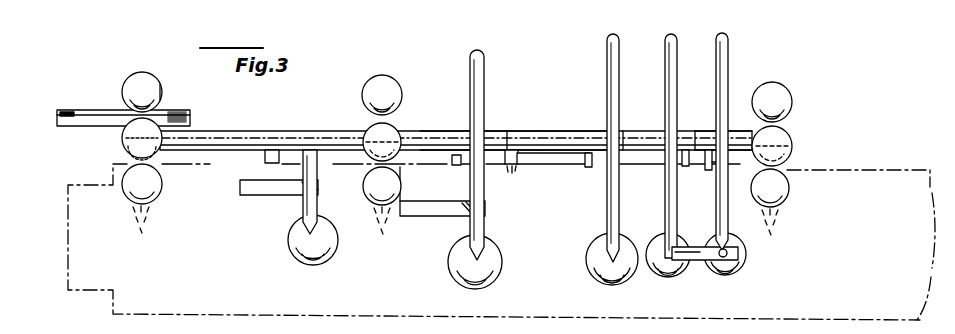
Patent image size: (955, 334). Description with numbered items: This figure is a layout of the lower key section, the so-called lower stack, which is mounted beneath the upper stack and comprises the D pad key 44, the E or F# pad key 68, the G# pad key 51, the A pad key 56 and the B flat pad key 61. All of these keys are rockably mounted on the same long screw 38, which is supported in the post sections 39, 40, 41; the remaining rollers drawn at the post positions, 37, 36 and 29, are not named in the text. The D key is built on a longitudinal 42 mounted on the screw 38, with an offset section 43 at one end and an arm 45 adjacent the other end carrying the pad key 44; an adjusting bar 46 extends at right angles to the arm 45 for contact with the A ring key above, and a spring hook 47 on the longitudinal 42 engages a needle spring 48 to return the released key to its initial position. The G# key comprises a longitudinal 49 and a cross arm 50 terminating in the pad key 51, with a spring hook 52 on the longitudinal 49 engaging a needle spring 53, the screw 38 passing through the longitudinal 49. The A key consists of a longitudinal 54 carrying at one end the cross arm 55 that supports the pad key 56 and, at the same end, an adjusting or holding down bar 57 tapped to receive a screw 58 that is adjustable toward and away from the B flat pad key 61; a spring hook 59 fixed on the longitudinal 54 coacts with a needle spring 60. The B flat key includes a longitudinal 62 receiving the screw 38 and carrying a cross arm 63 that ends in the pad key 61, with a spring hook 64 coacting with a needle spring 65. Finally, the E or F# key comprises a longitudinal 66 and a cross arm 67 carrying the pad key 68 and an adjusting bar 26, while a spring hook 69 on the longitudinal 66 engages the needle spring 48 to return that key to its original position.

The adjusting bar 26 is at (436, 216).
The roller 29 is at (780, 88).
The roller 36 is at (376, 76).
The roller 37 is at (139, 73).
The long screw 38 is at (497, 131).
The post section 39 is at (125, 143).
The post section 40 is at (400, 125).
The post section 41 is at (792, 138).
The longitudinal 42 is at (243, 112).
The offset section 43 is at (103, 110).
The D pad key 44 is at (326, 253).
The arm 45 is at (317, 202).
The adjusting bar 46 is at (265, 190).
The spring hook 47 is at (265, 158).
The needle spring 48 is at (345, 164).
The longitudinal 49 is at (543, 131).
The cross arm 50 is at (607, 218).
The G# pad key 51 is at (594, 271).
The spring hook 52 is at (587, 167).
The needle spring 53 is at (553, 155).
The longitudinal 54 is at (639, 135).
The cross arm 55 is at (678, 128).
The A pad key 56 is at (660, 242).
The adjusting or holding down bar 57 is at (698, 261).
The screw 58 is at (719, 262).
The spring hook 59 is at (686, 166).
The needle spring 60 is at (648, 166).
The B flat pad key 61 is at (736, 262).
The longitudinal 62 is at (738, 131).
The cross arm 63 is at (725, 206).
The spring hook 64 is at (712, 160).
The needle spring 65 is at (694, 168).
The longitudinal 66 is at (450, 131).
The cross arm 67 is at (482, 192).
The E or F# pad key 68 is at (490, 272).
The spring hook 69 is at (452, 165).